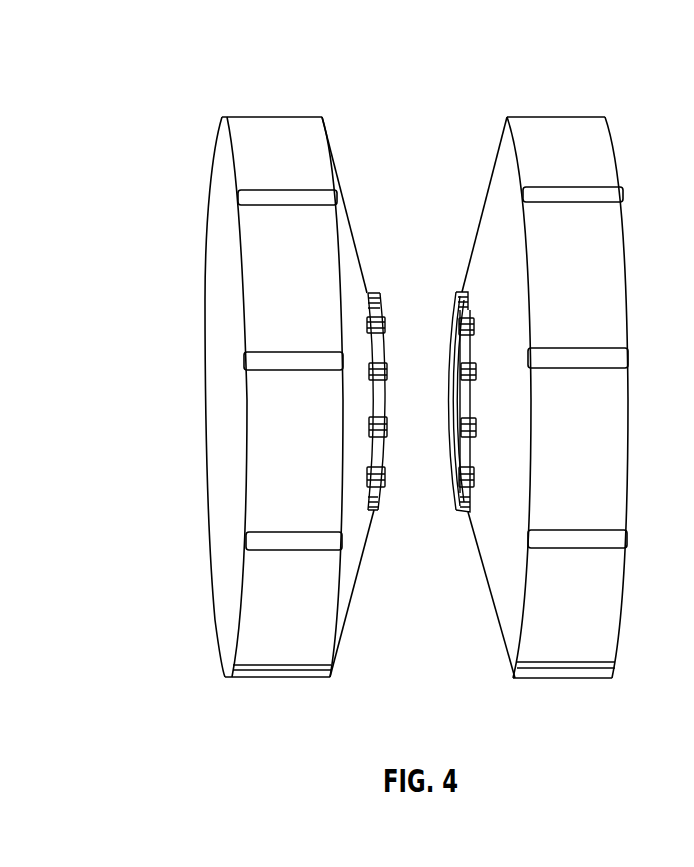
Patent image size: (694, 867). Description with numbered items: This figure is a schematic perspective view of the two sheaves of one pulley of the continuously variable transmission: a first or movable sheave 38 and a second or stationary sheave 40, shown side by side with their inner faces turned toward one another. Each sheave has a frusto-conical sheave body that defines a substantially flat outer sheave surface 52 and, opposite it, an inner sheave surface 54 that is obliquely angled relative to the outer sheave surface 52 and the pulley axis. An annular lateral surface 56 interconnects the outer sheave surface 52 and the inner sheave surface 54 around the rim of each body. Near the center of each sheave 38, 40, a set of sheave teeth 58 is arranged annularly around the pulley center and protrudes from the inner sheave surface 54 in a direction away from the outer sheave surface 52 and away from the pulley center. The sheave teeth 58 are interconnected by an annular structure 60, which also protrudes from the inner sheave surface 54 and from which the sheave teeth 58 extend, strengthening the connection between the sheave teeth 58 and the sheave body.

The first or movable sheave 38 is at (268, 127).
The second or stationary sheave 40 is at (562, 127).
The outer sheave surface 52 is at (210, 598).
The inner sheave surface 54 is at (345, 578).
The annular lateral surface 56 is at (280, 655).
The sheave teeth 58 is at (373, 512).
The annular structure 60 is at (380, 350).